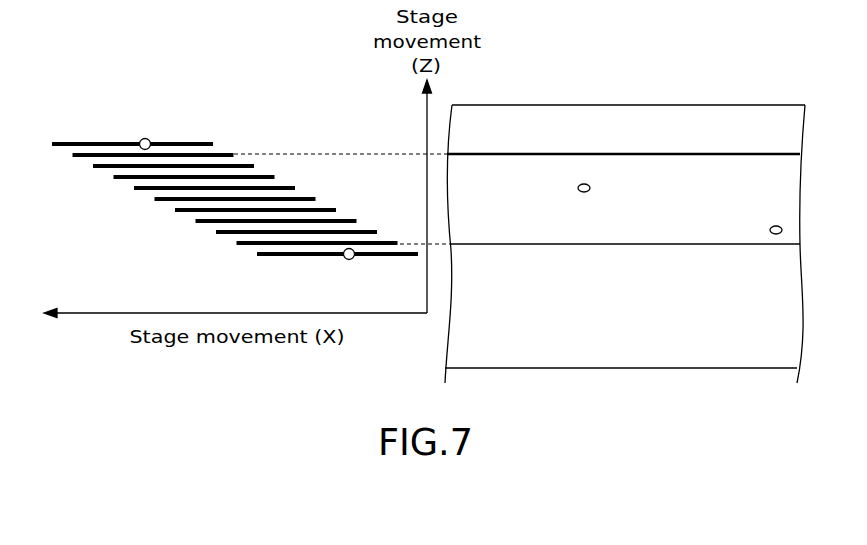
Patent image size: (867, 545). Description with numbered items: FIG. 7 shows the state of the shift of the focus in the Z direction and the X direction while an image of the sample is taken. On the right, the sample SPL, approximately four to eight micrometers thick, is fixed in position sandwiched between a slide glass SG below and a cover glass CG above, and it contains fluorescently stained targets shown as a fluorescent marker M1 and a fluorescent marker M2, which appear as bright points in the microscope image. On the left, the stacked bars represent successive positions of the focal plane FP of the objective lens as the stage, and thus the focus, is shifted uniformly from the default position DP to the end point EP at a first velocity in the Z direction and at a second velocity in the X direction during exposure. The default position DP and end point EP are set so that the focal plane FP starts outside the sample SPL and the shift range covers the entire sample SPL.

The end point EP is at (147, 138).
The focal plane FP is at (191, 141).
The default position DP is at (349, 260).
The sample SPL is at (511, 167).
The fluorescent marker M1 is at (584, 183).
The cover glass CG is at (704, 120).
The fluorescent marker M2 is at (776, 225).
The slide glass SG is at (703, 350).